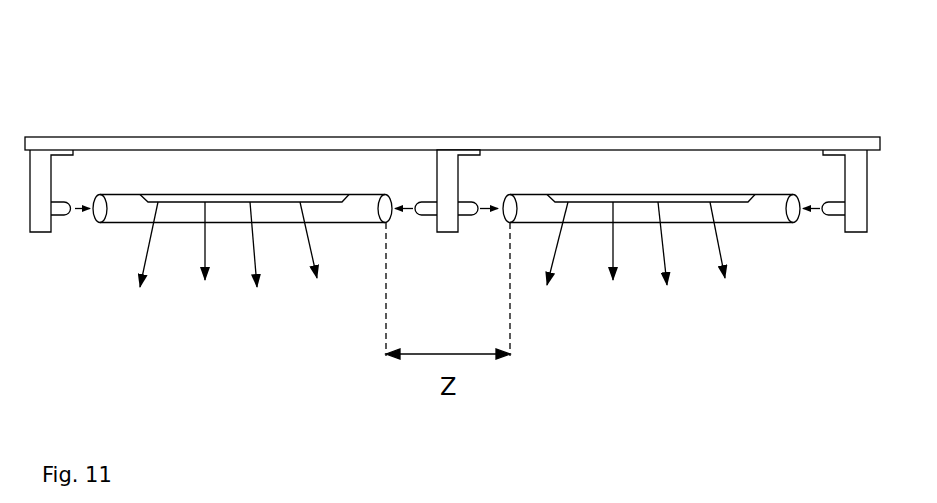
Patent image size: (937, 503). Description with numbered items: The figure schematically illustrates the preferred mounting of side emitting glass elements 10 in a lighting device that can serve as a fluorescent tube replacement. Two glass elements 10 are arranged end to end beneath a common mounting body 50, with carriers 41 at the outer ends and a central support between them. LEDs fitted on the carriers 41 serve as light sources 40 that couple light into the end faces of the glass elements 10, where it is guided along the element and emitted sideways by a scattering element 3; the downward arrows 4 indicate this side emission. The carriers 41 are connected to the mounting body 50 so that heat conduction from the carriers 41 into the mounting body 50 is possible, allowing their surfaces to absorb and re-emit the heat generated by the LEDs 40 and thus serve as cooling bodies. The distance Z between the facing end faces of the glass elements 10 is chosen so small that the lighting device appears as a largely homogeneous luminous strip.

The mounting body 50 is at (361, 142).
The carrier 41 is at (37, 165).
The light source 40 is at (447, 163).
The side emitting glass element 10 is at (120, 203).
The scattering element 3 is at (233, 198).
The emitted flow 4 is at (432, 262).